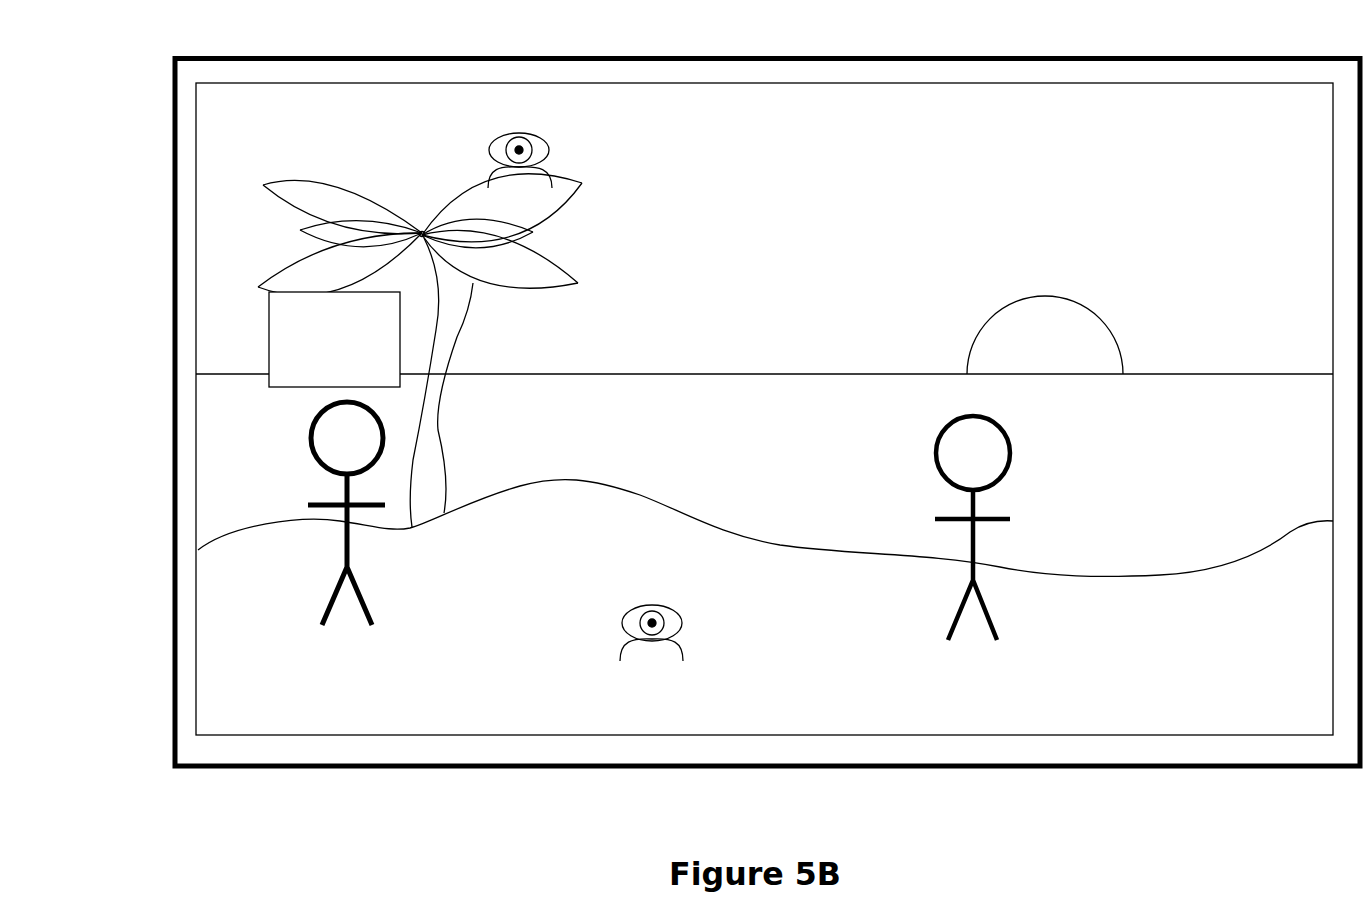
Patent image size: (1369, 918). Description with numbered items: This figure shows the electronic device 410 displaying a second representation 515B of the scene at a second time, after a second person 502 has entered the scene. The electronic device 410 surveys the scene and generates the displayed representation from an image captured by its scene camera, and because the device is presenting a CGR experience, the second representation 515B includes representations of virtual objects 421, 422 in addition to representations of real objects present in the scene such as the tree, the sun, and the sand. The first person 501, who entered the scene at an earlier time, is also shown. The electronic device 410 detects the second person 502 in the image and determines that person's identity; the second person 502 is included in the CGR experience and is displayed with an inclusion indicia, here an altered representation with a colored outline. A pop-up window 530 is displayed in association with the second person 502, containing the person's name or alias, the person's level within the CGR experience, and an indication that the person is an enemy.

The electronic device 410 is at (757, 56).
The second representation 515B is at (764, 409).
The virtual object 421 is at (550, 146).
The virtual object 422 is at (624, 619).
The pop-up window 530 is at (269, 309).
The first person 501 is at (1015, 415).
The second person 502 is at (302, 419).